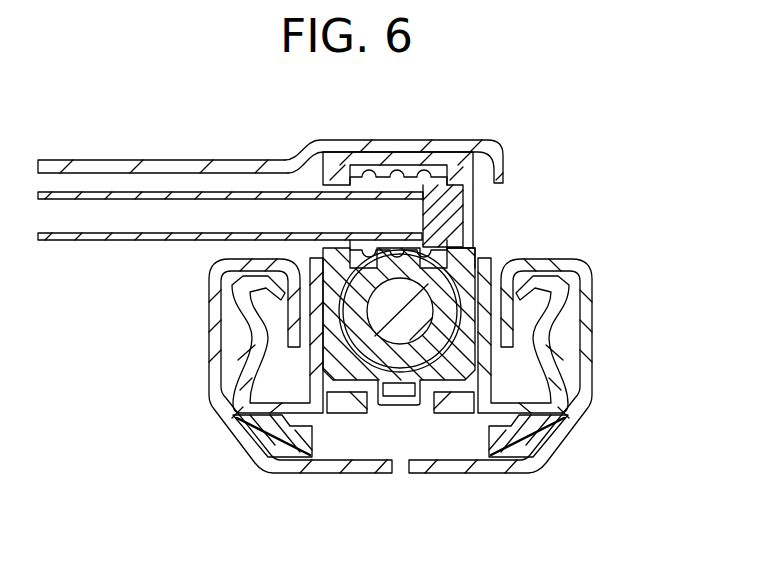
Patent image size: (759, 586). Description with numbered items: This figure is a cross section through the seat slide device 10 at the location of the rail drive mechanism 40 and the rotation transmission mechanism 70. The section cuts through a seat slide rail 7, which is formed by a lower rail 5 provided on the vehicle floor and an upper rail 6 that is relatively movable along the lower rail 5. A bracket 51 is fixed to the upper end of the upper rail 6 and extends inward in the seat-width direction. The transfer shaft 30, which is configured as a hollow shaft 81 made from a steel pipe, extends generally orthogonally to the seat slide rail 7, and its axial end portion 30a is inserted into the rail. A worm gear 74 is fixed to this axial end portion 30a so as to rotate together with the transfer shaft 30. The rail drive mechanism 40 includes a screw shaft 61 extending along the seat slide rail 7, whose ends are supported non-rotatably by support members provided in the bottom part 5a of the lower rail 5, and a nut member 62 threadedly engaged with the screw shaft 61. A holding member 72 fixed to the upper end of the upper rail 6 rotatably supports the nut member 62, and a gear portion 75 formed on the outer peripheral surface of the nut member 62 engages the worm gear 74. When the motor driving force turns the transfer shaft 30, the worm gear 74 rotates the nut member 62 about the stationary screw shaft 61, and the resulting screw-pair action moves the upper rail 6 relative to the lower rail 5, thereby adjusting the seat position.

The seat slide device 10 is at (635, 151).
The bracket 51 is at (100, 160).
The holding member 72 is at (501, 151).
The worm gear 74 is at (468, 212).
The transfer shaft 30 is at (221, 244).
The axial end portion 30a is at (221, 244).
The hollow shaft 81 is at (95, 240).
The nut member 62 is at (456, 242).
The gear portion 75 is at (467, 262).
The screw shaft 61 is at (423, 405).
The lower rail 5 is at (262, 366).
The seat slide rail 7 is at (207, 377).
The bottom part 5a is at (462, 461).
The rail drive mechanism 40 is at (299, 388).
The rotation transmission mechanism 70 is at (343, 418).
The upper rail 6 is at (572, 321).